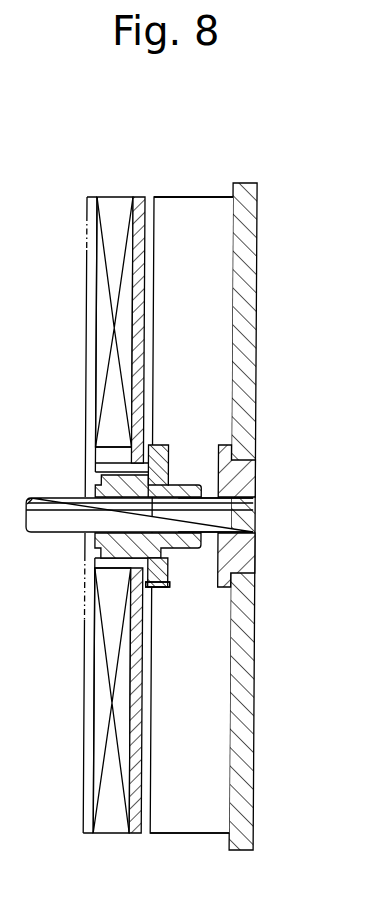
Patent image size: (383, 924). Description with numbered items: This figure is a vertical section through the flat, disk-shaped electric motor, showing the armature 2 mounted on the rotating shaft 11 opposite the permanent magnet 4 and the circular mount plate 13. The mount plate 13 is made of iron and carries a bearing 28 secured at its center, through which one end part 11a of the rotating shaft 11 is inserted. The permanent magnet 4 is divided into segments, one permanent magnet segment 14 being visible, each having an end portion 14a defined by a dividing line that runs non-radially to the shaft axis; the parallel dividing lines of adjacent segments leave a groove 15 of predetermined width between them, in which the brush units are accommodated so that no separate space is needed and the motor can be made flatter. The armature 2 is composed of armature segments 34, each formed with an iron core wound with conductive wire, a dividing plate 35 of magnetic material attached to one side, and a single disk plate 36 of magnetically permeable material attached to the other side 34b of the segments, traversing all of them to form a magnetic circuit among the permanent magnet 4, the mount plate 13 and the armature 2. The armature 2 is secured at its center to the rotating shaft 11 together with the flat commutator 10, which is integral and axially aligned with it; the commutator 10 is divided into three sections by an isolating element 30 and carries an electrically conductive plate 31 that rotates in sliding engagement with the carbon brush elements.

The armature 2 is at (80, 186).
The permanent magnet 4 is at (196, 196).
The commutator 10 is at (178, 580).
The rotating shaft 11 is at (58, 494).
The end part of the rotating shaft 11a is at (257, 518).
The mount plate 13 is at (258, 196).
The permanent magnet segment 14 is at (220, 196).
The end portion of the permanent magnet segment 14a is at (195, 812).
The groove 15 is at (182, 238).
The bearing 28 is at (257, 472).
The isolating element 30 is at (188, 483).
The electrically conductive plate 31 is at (165, 442).
The armature segment 34 is at (117, 196).
The other side of the armature segment 34b is at (97, 292).
The dividing plate 35 is at (140, 196).
The disk plate 36 is at (87, 210).